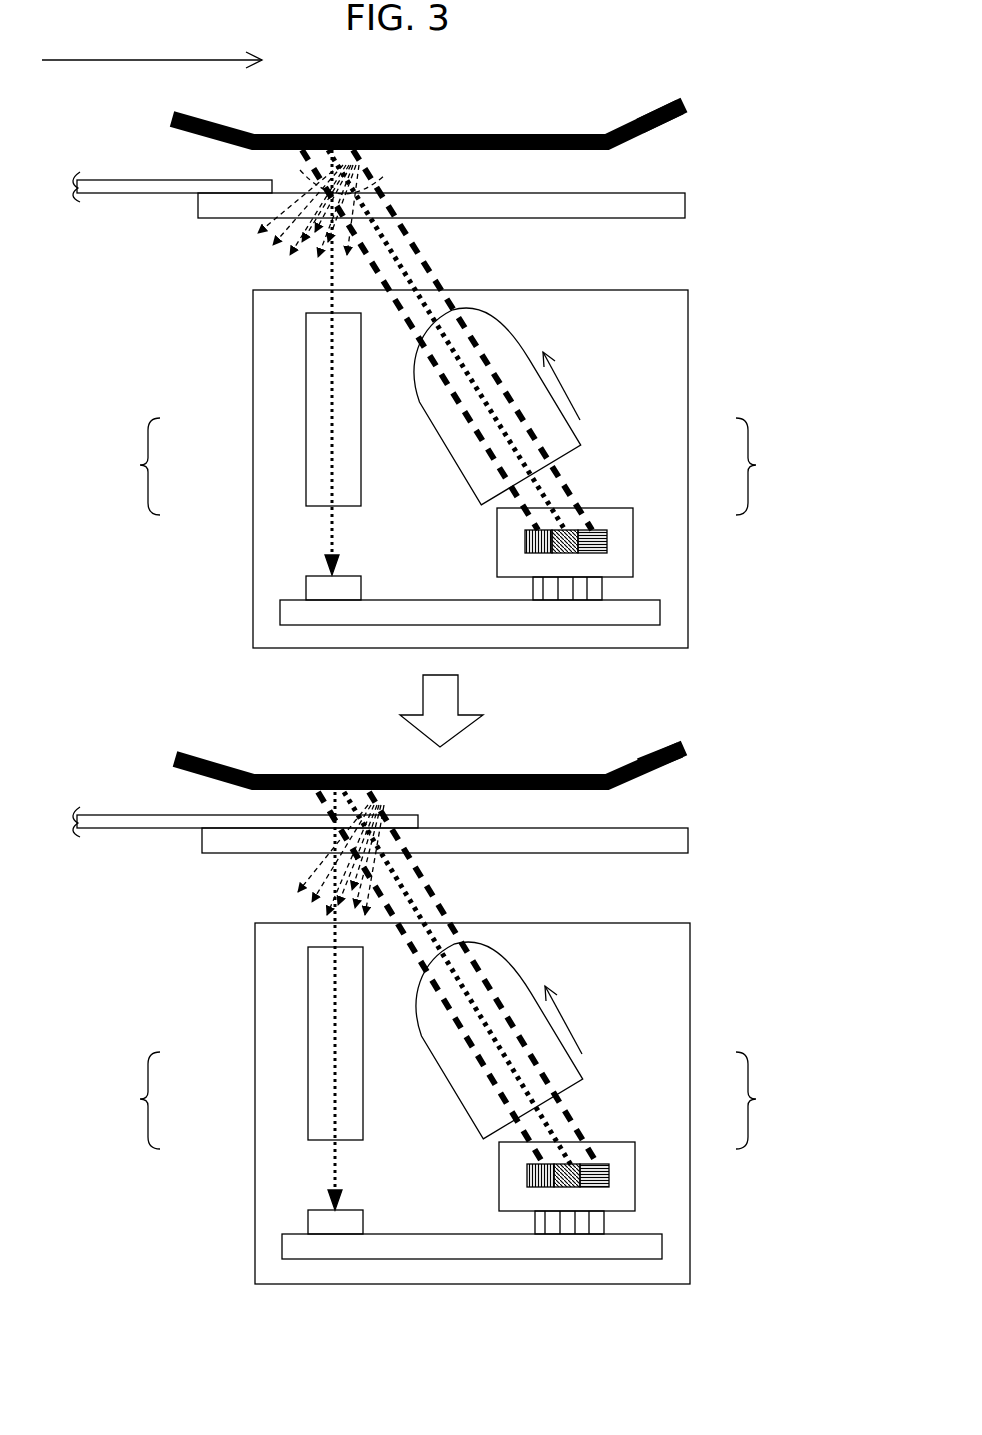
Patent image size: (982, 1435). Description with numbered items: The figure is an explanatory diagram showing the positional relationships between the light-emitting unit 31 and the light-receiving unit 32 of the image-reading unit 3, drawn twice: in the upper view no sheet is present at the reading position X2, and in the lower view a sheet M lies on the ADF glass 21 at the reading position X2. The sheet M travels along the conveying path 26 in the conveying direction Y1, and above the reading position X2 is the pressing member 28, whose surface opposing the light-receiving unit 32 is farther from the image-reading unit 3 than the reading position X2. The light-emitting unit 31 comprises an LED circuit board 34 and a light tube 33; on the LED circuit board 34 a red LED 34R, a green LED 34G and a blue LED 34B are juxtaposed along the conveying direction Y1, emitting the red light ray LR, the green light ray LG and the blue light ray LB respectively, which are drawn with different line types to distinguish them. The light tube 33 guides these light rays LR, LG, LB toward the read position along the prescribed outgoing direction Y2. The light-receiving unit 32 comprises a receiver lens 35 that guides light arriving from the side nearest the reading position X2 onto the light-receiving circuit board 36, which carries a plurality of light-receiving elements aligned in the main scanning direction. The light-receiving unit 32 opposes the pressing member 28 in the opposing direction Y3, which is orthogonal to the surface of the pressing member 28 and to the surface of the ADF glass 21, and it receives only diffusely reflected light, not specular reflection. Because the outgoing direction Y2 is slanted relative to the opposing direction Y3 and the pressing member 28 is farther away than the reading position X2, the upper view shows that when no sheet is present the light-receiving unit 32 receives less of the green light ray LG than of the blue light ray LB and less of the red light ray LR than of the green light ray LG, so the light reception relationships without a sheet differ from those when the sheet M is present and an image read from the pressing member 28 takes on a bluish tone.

The image-reading unit 3 is at (688, 325).
The ADF glass 21 is at (675, 191).
The conveying path 26 is at (493, 177).
The pressing member 28 is at (637, 128).
The light-emitting unit 31 is at (763, 783).
The light-receiving unit 32 is at (133, 783).
The light tube 33 is at (568, 437).
The LED circuit board 34 is at (620, 538).
The red LED 34R is at (535, 553).
The green LED 34G is at (567, 553).
The blue LED 34B is at (595, 553).
The receiver lens 35 is at (318, 428).
The light-receiving circuit board 36 is at (313, 590).
The sheet M is at (122, 185).
The red light ray LR is at (305, 192).
The green light ray LG is at (330, 190).
The blue light ray LB is at (326, 192).
The reading position X2 is at (385, 134).
The conveying direction Y1 is at (137, 58).
The outgoing direction Y2 is at (563, 380).
The opposing direction Y3 is at (318, 288).